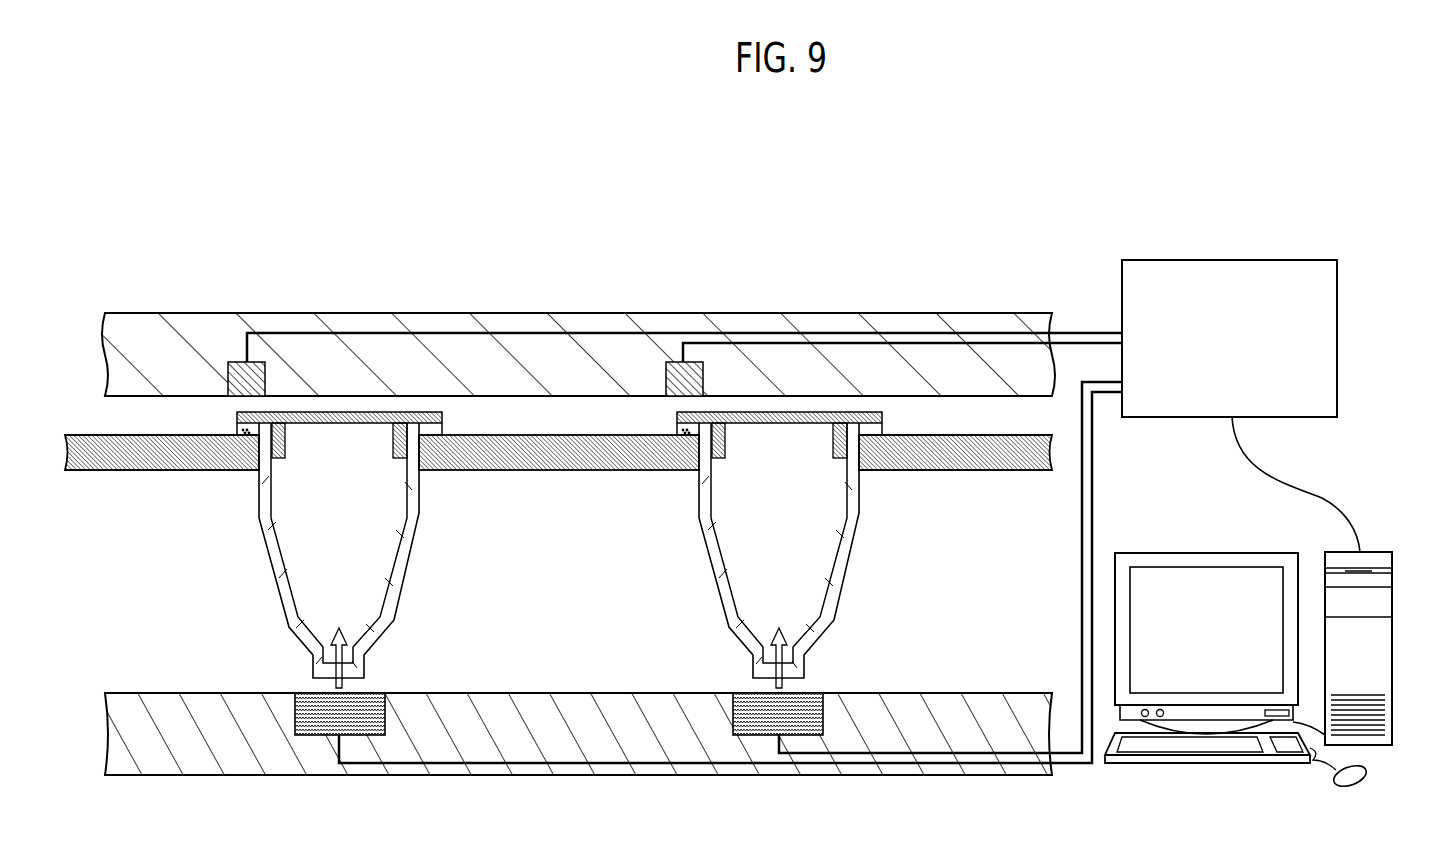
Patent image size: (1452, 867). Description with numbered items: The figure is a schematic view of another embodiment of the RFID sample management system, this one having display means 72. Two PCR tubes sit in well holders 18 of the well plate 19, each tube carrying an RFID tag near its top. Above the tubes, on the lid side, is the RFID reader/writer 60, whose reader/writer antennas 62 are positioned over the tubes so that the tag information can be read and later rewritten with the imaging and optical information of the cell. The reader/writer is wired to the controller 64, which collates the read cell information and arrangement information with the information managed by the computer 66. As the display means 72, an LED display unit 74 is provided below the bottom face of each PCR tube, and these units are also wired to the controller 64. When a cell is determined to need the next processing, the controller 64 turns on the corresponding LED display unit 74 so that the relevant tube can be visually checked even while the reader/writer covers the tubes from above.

The well holder 18 is at (128, 469).
The well plate 19 is at (150, 595).
The RFID reader/writer 60 is at (885, 320).
The reader/writer antenna 62 is at (228, 374).
The controller 64 is at (1228, 266).
The computer 66 is at (1385, 648).
The display means 72 is at (962, 700).
The LED display unit 74 is at (293, 710).